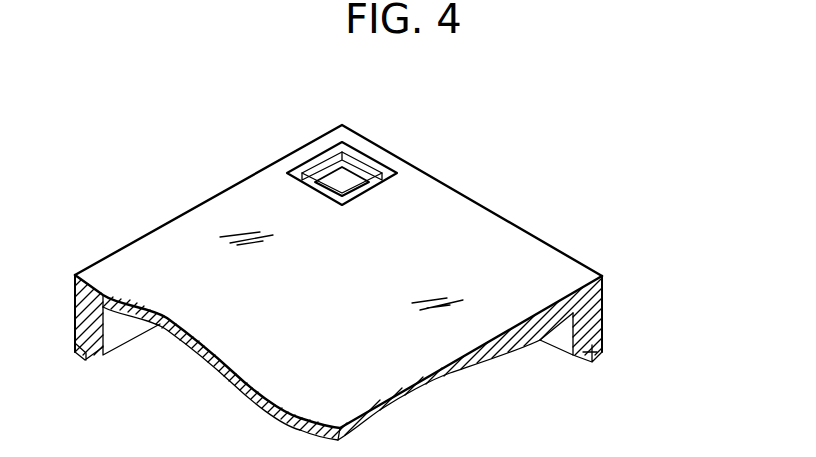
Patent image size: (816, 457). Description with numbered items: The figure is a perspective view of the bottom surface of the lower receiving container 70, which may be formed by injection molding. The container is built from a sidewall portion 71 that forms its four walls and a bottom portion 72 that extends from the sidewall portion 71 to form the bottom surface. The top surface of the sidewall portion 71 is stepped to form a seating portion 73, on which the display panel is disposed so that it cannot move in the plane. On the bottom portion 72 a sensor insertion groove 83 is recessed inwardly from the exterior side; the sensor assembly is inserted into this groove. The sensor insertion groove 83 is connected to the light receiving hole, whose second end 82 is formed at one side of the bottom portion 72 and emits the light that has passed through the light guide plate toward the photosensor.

The lower receiving container 70 is at (688, 238).
The sidewall portion 71 is at (590, 317).
The bottom portion 72 is at (495, 272).
The seating portion 73 is at (600, 352).
The second end 82 is at (342, 184).
The sensor insertion groove 83 is at (362, 169).